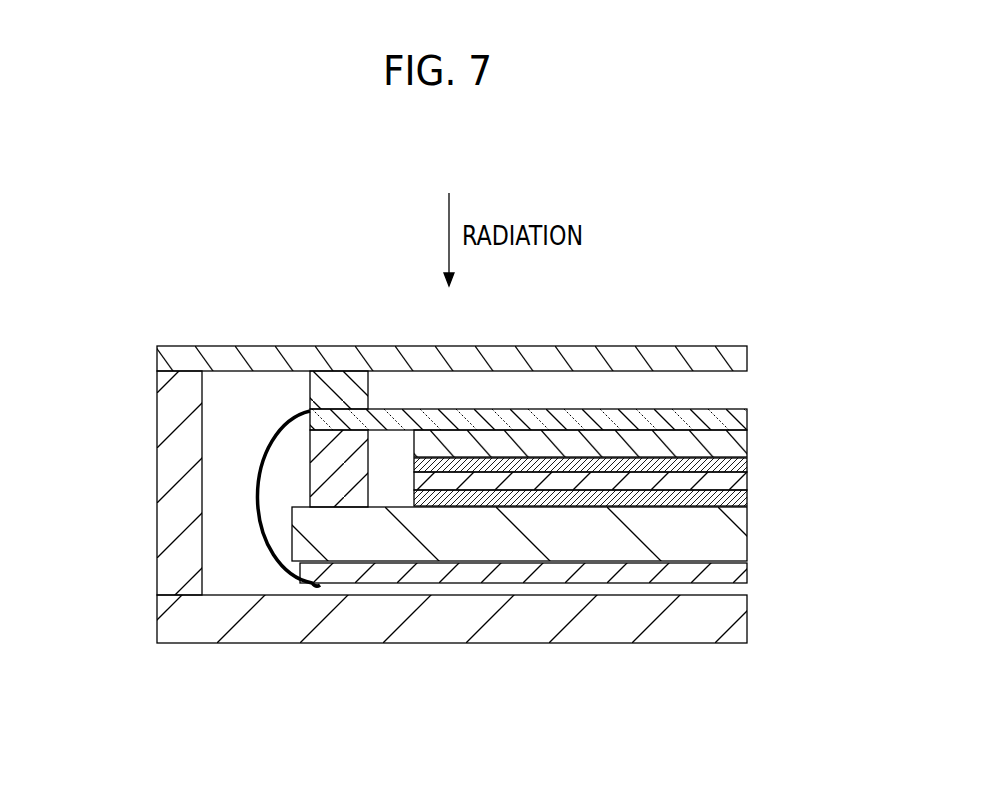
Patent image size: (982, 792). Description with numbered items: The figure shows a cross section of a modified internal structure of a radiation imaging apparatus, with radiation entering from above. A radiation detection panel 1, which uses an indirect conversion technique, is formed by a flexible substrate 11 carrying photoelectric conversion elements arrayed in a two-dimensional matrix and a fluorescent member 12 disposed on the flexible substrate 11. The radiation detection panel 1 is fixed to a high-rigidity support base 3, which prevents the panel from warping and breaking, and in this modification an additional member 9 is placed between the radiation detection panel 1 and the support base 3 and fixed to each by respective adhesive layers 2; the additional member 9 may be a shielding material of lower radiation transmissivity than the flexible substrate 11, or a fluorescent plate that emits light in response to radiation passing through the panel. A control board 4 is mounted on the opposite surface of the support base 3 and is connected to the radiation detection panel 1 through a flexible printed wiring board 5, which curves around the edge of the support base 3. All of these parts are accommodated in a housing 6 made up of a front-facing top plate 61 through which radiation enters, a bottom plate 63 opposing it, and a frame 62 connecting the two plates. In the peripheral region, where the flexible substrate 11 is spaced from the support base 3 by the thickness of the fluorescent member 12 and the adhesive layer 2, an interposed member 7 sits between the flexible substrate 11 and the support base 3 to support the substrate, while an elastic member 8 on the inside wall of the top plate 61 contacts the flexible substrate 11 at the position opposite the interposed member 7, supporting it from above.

The radiation detection panel 1 is at (810, 343).
The flexible substrate 11 is at (728, 425).
The fluorescent member 12 is at (727, 440).
The adhesive layer 2 is at (745, 467).
The additional member 9 is at (730, 482).
The support base 3 is at (727, 524).
The control board 4 is at (733, 571).
The flexible printed wiring board 5 is at (277, 567).
The housing 6 is at (70, 310).
The top plate 61 is at (193, 365).
The frame 62 is at (177, 482).
The bottom plate 63 is at (183, 613).
The interposed member 7 is at (328, 463).
The elastic member 8 is at (332, 390).